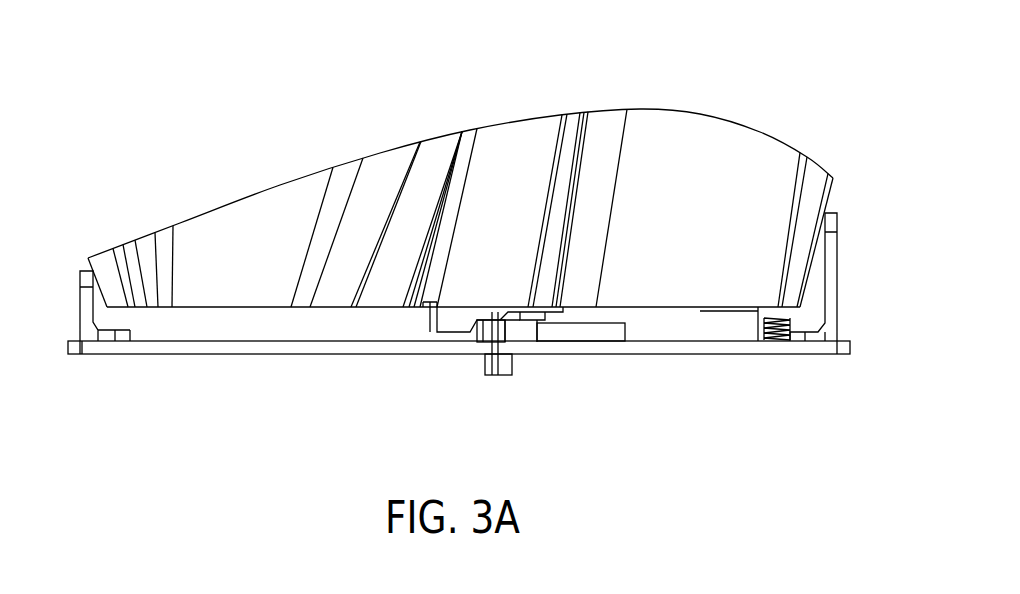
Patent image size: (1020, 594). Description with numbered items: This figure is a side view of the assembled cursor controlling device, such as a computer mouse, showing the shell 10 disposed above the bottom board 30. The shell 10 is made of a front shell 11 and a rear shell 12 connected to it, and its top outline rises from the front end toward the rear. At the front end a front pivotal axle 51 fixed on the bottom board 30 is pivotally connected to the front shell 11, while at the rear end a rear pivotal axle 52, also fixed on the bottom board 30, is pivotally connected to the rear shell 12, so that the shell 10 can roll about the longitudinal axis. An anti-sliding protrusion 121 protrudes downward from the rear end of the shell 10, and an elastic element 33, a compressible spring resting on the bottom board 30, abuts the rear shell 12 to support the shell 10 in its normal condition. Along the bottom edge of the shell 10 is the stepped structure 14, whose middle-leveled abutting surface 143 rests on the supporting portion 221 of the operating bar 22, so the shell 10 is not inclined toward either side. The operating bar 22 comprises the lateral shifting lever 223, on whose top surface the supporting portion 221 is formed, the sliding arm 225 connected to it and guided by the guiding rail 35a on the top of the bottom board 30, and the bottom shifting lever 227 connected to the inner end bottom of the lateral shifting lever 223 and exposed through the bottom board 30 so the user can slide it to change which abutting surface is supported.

The shell 10 is at (515, 116).
The front shell 11 is at (278, 185).
The rear shell 12 is at (693, 113).
The stepped structure 14 is at (433, 317).
The middle-leveled abutting surface 143 is at (482, 318).
The operating bar 22 is at (510, 394).
The supporting portion 221 is at (494, 350).
The lateral shifting lever 223 is at (487, 333).
The sliding arm 225 is at (566, 379).
The bottom shifting lever 227 is at (507, 360).
The bottom board 30 is at (253, 366).
The elastic element 33 is at (777, 330).
The guiding rail 35a is at (593, 330).
The front pivotal axle 51 is at (85, 308).
The rear pivotal axle 52 is at (830, 275).
The anti-sliding protrusion 121 is at (760, 312).